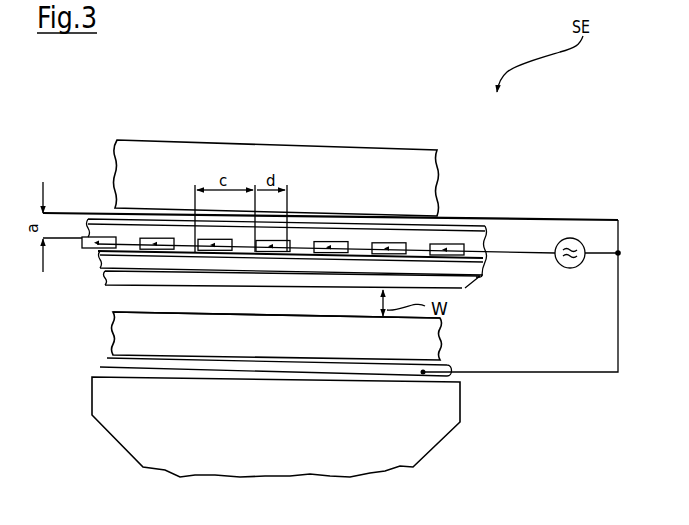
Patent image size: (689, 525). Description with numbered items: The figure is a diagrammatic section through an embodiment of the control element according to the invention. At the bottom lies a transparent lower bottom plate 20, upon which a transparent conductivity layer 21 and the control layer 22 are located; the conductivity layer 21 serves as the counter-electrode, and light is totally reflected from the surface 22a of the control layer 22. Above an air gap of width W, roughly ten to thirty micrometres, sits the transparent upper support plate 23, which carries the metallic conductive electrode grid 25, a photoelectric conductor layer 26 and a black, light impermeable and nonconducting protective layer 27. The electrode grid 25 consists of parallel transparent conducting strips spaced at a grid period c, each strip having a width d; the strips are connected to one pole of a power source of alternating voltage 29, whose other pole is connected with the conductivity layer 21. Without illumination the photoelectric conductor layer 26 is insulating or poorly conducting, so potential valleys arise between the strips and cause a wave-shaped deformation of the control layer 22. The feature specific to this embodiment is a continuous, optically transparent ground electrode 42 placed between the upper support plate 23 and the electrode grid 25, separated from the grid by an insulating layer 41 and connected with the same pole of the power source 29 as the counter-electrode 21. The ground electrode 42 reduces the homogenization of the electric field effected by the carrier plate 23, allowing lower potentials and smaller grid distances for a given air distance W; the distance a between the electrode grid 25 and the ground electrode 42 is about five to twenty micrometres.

The lower bottom plate 20 is at (448, 412).
The conductivity layer 21 is at (105, 367).
The control layer 22 is at (434, 343).
The surface of control layer 22a is at (228, 315).
The upper support plate 23 is at (337, 157).
The electrode grid 25 is at (75, 247).
The photoelectric conductor layer 26 is at (488, 247).
The protective layer 27 is at (466, 287).
The power source of alternating voltage 29 is at (570, 268).
The insulating layer 41 is at (450, 233).
The ground electrode 42 is at (123, 213).